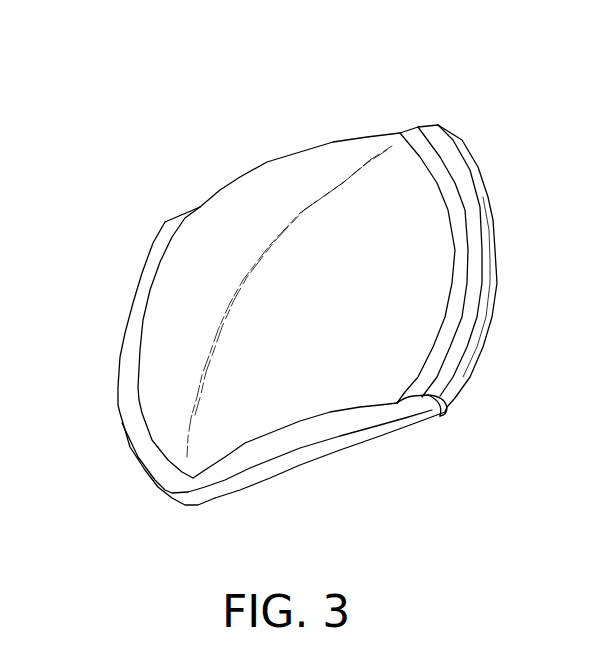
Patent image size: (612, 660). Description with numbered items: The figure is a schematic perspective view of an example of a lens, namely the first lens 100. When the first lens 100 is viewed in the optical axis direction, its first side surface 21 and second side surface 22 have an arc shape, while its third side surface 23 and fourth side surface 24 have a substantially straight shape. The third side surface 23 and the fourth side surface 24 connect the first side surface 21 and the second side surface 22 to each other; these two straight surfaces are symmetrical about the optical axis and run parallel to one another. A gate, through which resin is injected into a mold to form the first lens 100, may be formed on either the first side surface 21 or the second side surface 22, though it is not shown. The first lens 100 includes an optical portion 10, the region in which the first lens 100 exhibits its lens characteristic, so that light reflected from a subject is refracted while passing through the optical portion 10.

The first lens 100 is at (512, 39).
The optical portion 10 is at (343, 203).
The first side surface 21 is at (118, 350).
The second side surface 22 is at (482, 258).
The third side surface 23 is at (298, 440).
The fourth side surface 24 is at (243, 177).